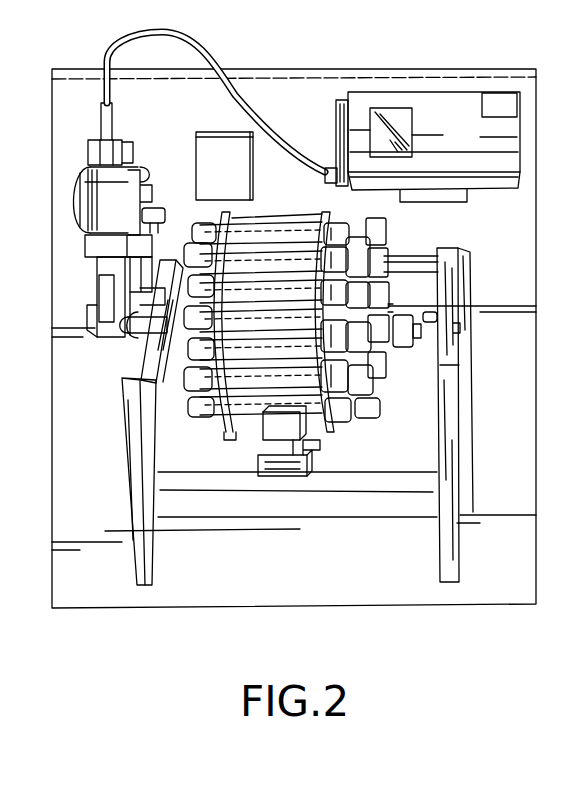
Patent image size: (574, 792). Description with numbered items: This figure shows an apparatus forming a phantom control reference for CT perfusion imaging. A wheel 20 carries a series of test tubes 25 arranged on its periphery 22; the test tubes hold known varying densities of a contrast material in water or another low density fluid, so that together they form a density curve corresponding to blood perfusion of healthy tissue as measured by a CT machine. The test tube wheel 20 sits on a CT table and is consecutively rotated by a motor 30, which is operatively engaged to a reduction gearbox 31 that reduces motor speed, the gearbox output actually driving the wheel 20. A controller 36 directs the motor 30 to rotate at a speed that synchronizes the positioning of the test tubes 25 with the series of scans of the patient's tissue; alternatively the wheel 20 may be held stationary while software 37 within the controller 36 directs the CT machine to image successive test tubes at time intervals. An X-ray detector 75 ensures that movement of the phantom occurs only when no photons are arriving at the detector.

The wheel 20 is at (266, 303).
The periphery 22 is at (217, 428).
The test tubes 25 is at (270, 402).
The motor 30 is at (102, 153).
The gearbox 31 is at (92, 197).
The controller 36 is at (422, 112).
The software 37 is at (495, 106).
The X-ray detector 75 is at (231, 149).